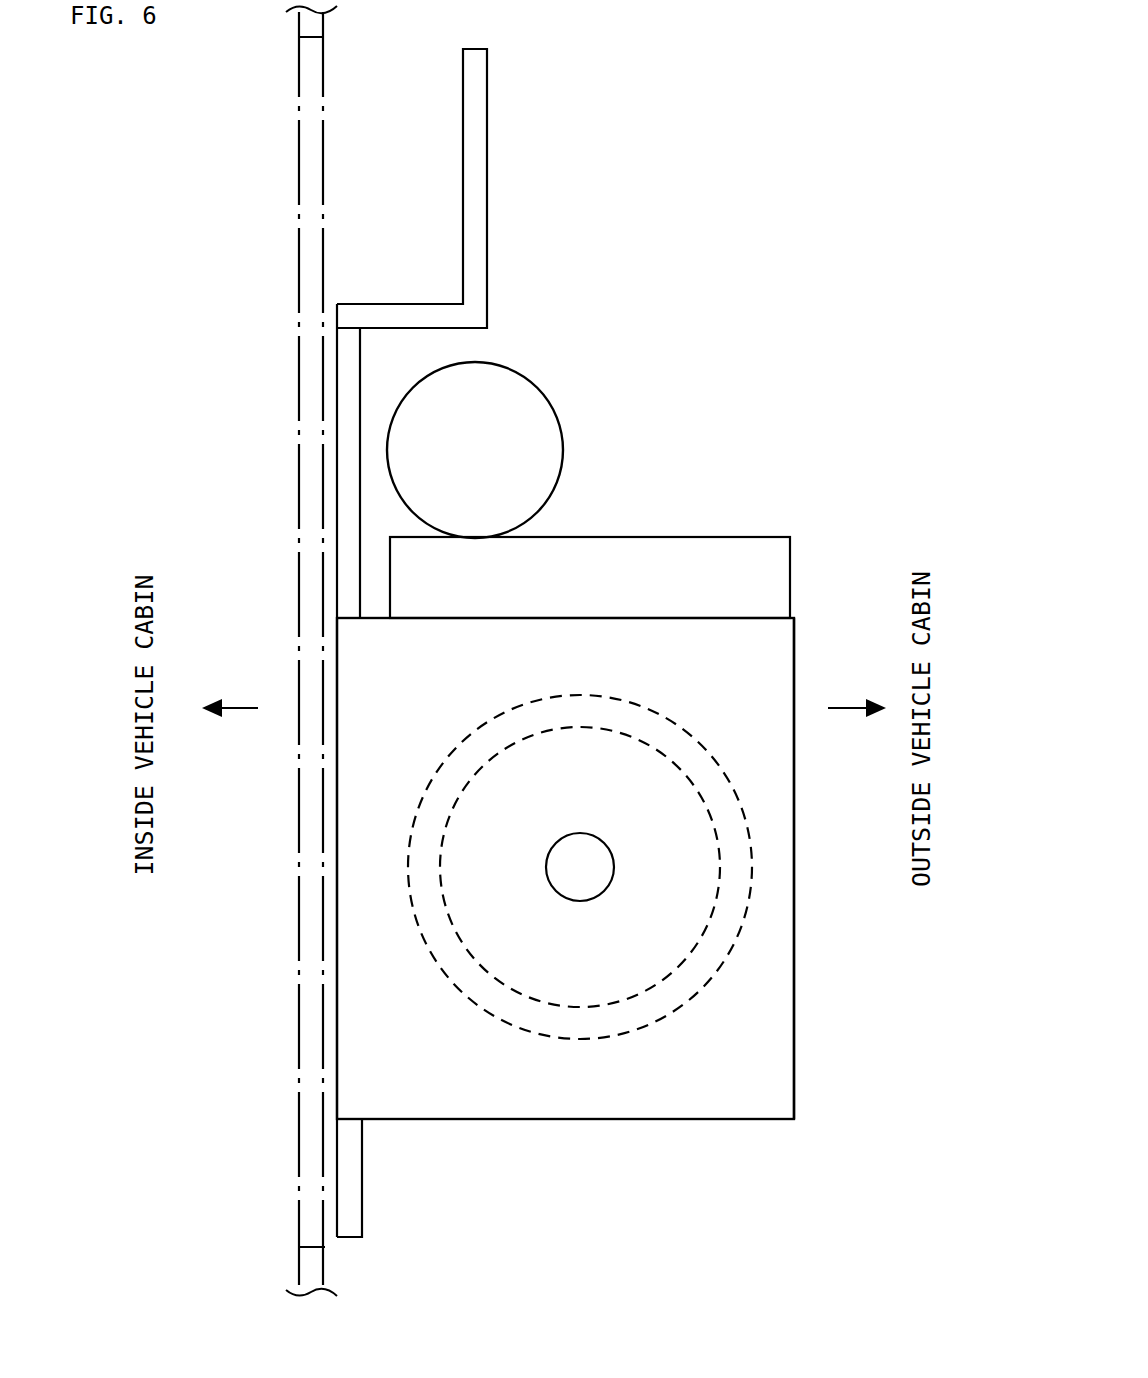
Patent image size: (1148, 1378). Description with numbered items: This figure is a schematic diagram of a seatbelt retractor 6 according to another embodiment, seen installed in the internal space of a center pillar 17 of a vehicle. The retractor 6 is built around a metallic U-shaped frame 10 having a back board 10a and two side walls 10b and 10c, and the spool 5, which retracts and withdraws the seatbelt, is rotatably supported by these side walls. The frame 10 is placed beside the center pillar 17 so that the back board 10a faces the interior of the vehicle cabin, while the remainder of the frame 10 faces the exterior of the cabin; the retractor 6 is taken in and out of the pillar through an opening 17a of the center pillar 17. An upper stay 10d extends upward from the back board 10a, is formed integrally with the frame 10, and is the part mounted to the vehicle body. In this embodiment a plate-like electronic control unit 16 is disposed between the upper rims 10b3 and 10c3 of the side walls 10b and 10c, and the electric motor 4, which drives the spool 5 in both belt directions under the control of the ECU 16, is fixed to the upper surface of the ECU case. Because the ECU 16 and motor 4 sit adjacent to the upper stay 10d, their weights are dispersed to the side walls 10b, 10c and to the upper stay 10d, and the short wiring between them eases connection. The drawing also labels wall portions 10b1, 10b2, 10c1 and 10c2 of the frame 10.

The electric motor 4 is at (528, 412).
The spool 5 is at (540, 999).
The seatbelt retractor 6 is at (677, 236).
The frame 10 is at (628, 650).
The back board 10a is at (350, 1183).
The side wall 10b is at (597, 1093).
The side wall 10b1 is at (795, 978).
The bottom wall 10b2 is at (740, 1118).
The upper rim 10b3 is at (716, 615).
The side wall 10c is at (565, 925).
The outer surface of side wall 10c1 is at (856, 868).
The outer surface of bottom wall 10c2 is at (585, 1173).
The upper rim 10c3 is at (590, 526).
The upper stay 10d is at (488, 173).
The electronic control unit 16 is at (643, 545).
The center pillar 17 is at (293, 1060).
The opening 17a is at (313, 38).